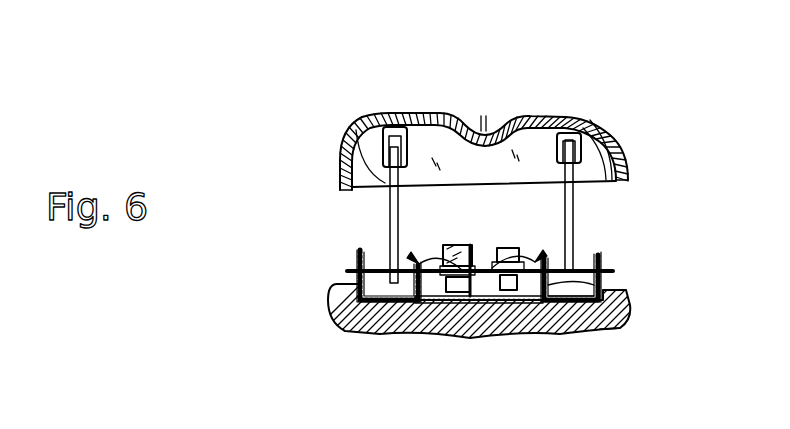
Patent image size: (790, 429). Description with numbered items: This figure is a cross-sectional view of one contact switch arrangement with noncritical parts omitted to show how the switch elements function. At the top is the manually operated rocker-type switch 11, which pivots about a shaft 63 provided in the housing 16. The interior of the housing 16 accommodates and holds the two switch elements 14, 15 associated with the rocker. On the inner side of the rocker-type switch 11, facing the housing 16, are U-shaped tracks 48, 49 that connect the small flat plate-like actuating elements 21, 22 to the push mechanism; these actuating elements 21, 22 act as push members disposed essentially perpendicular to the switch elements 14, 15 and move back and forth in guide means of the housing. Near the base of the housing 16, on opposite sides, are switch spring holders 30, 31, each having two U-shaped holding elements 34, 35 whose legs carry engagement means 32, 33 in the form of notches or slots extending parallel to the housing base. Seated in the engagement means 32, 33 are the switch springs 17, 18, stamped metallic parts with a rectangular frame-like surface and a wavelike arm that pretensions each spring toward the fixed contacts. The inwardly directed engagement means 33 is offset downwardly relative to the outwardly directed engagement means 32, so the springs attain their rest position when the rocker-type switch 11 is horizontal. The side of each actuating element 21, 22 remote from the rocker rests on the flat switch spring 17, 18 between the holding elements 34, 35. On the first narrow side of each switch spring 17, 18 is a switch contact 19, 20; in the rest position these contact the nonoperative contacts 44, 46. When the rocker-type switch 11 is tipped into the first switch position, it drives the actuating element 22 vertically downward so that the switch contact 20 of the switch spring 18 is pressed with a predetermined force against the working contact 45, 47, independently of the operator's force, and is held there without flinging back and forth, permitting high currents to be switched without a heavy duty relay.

The rocker-type switch 11 is at (519, 118).
The U-shaped track 49 is at (358, 122).
The shaft 63 is at (467, 128).
The U-shaped track 48 is at (601, 117).
The actuating element 22 is at (345, 153).
The actuating element 21 is at (600, 183).
The nonoperative contact 46 is at (452, 250).
The nonoperative contact 44 is at (578, 180).
The switch element 15 is at (430, 257).
The switch element 14 is at (573, 250).
The switch spring 18 is at (377, 262).
The U-shaped holding element 34 is at (603, 257).
The switch spring 17 is at (582, 262).
The engagement means 32 is at (603, 290).
The housing 16 is at (348, 330).
The switch contact 20 is at (403, 336).
The switch spring holder 31 is at (330, 313).
The switch spring holder 30 is at (627, 310).
The working contact 47 is at (432, 340).
The working contact 45 is at (477, 338).
The switch contact 19 is at (525, 338).
The engagement means 33 is at (548, 333).
The U-shaped holding element 35 is at (608, 334).